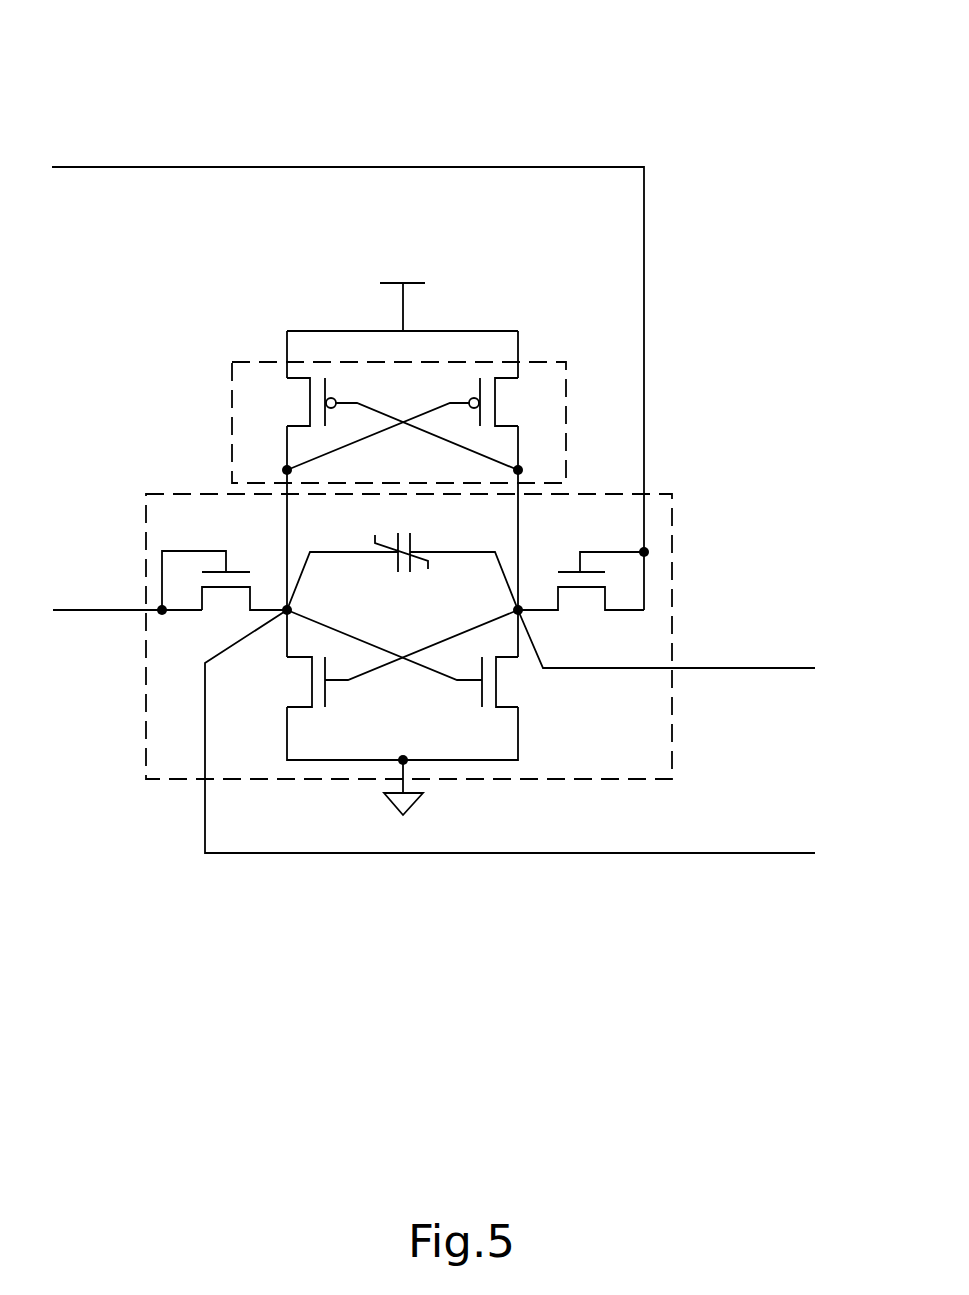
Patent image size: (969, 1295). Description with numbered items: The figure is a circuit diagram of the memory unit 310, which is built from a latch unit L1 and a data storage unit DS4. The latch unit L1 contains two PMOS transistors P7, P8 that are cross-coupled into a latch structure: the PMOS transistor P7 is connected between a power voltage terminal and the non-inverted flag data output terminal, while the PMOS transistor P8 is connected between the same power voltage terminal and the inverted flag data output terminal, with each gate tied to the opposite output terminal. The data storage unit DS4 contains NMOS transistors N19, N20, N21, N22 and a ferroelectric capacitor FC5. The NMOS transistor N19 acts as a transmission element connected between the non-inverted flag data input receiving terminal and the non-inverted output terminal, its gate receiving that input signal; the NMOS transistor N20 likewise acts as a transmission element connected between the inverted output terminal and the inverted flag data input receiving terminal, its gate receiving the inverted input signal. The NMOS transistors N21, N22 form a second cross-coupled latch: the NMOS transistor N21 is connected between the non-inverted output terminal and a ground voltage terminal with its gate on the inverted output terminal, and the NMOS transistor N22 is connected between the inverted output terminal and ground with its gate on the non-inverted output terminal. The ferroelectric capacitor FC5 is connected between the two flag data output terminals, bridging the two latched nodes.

The memory unit 310 is at (656, 92).
The latch unit L1 is at (566, 362).
The data storage unit DS4 is at (672, 494).
The PMOS transistor P7 is at (392, 424).
The PMOS transistor P8 is at (413, 424).
The NMOS transistor N19 is at (224, 560).
The NMOS transistor N20 is at (581, 560).
The NMOS transistor N21 is at (383, 658).
The NMOS transistor N22 is at (402, 677).
The ferroelectric capacitor FC5 is at (402, 550).